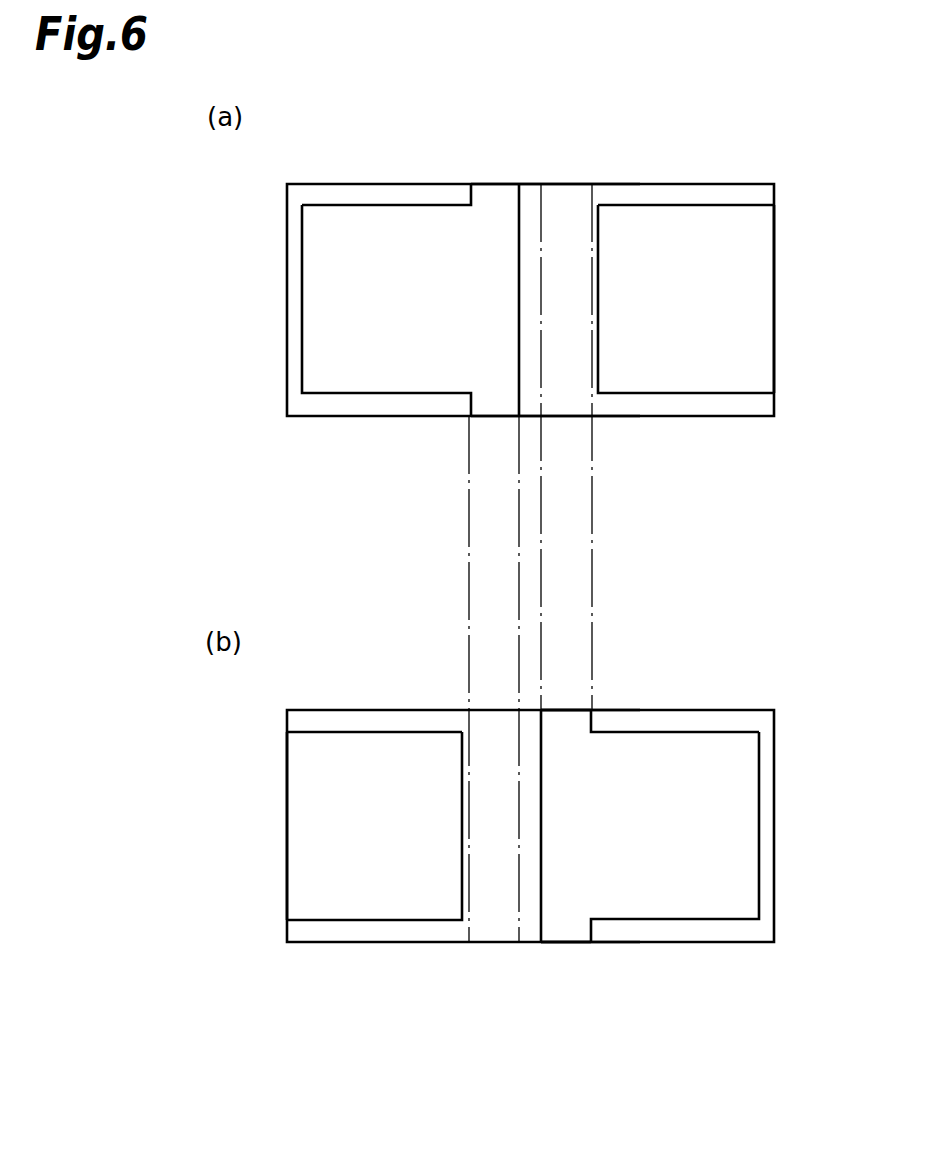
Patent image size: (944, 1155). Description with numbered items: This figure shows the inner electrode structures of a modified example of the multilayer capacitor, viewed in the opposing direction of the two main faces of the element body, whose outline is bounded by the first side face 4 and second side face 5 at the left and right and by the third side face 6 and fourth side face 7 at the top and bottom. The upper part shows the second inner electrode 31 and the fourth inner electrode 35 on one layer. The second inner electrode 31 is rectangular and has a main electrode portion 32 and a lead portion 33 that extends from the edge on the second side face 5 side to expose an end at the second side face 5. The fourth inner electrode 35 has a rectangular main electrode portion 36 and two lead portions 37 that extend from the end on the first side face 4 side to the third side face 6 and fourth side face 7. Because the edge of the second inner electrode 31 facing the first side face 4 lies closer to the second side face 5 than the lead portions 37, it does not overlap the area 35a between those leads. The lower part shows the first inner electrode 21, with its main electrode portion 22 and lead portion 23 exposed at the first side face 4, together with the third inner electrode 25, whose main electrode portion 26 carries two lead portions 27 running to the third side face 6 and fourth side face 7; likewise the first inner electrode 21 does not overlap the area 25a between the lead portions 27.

The first side face 4 is at (287, 357).
The second side face 5 is at (776, 196).
The third side face 6 is at (620, 418).
The fourth side face 7 is at (618, 184).
The first inner electrode 21 is at (400, 921).
The main electrode portion 22 is at (402, 812).
The lead portion 23 is at (293, 822).
The third inner electrode 25 is at (401, 395).
The area 25a is at (491, 301).
The main electrode portion 26 is at (401, 288).
The lead portions 27 is at (492, 192).
The second inner electrode 31 is at (715, 396).
The main electrode portion 32 is at (690, 288).
The lead portion 33 is at (770, 293).
The fourth inner electrode 35 is at (715, 921).
The area 35a is at (557, 815).
The main electrode portion 36 is at (689, 812).
The lead portions 37 is at (560, 719).